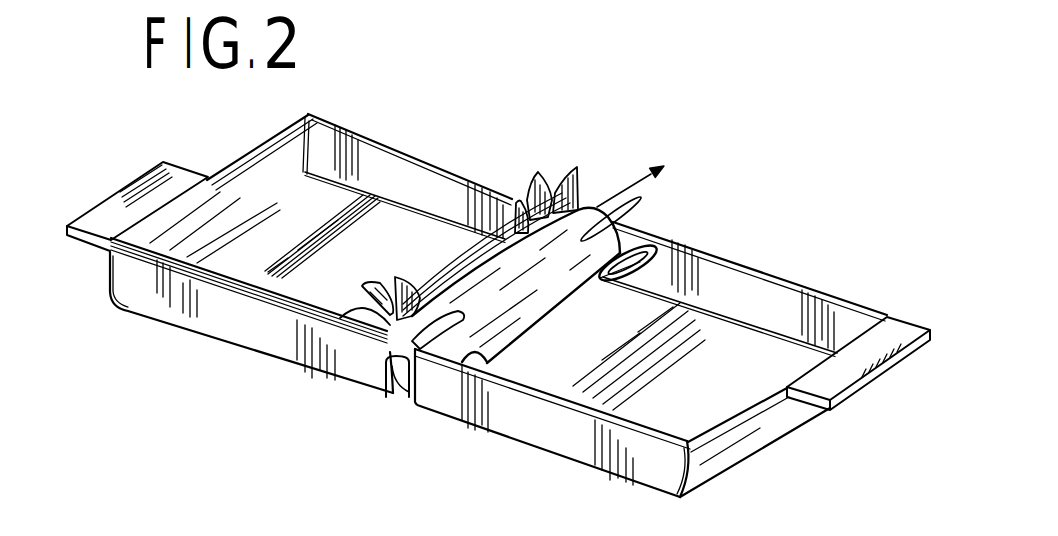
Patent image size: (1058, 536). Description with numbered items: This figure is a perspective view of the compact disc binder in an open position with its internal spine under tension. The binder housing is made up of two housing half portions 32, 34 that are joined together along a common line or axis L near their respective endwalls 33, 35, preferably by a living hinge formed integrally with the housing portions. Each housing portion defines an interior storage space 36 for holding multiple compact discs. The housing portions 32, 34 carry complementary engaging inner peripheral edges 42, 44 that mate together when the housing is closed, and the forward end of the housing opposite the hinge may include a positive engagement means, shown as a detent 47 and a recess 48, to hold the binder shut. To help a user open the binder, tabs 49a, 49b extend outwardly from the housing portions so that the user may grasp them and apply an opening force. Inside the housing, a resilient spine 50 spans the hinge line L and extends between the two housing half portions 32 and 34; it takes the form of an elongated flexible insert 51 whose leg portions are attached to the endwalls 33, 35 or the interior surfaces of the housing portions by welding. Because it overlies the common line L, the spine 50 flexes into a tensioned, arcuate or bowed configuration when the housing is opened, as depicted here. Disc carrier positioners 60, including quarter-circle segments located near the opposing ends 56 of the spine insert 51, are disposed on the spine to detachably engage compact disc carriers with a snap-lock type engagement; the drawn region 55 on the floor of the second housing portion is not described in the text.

The housing half portion 32 is at (558, 453).
The endwall 33 is at (379, 362).
The housing half portion 34 is at (223, 300).
The endwall 35 is at (406, 398).
The interior storage space 36 is at (406, 171).
The inner peripheral edge 42 is at (861, 305).
The inner peripheral edge 44 is at (356, 134).
The detent 47 is at (802, 370).
The recess 48 is at (207, 188).
The tab 49a is at (92, 218).
The tab 49b is at (904, 362).
The resilient spine 50 is at (508, 250).
The flexible insert 51 is at (556, 285).
The floor of second tray 55 is at (595, 353).
The opposing end 56 is at (412, 250).
The disc carrier positioner 60 is at (659, 249).
The common line L is at (633, 187).